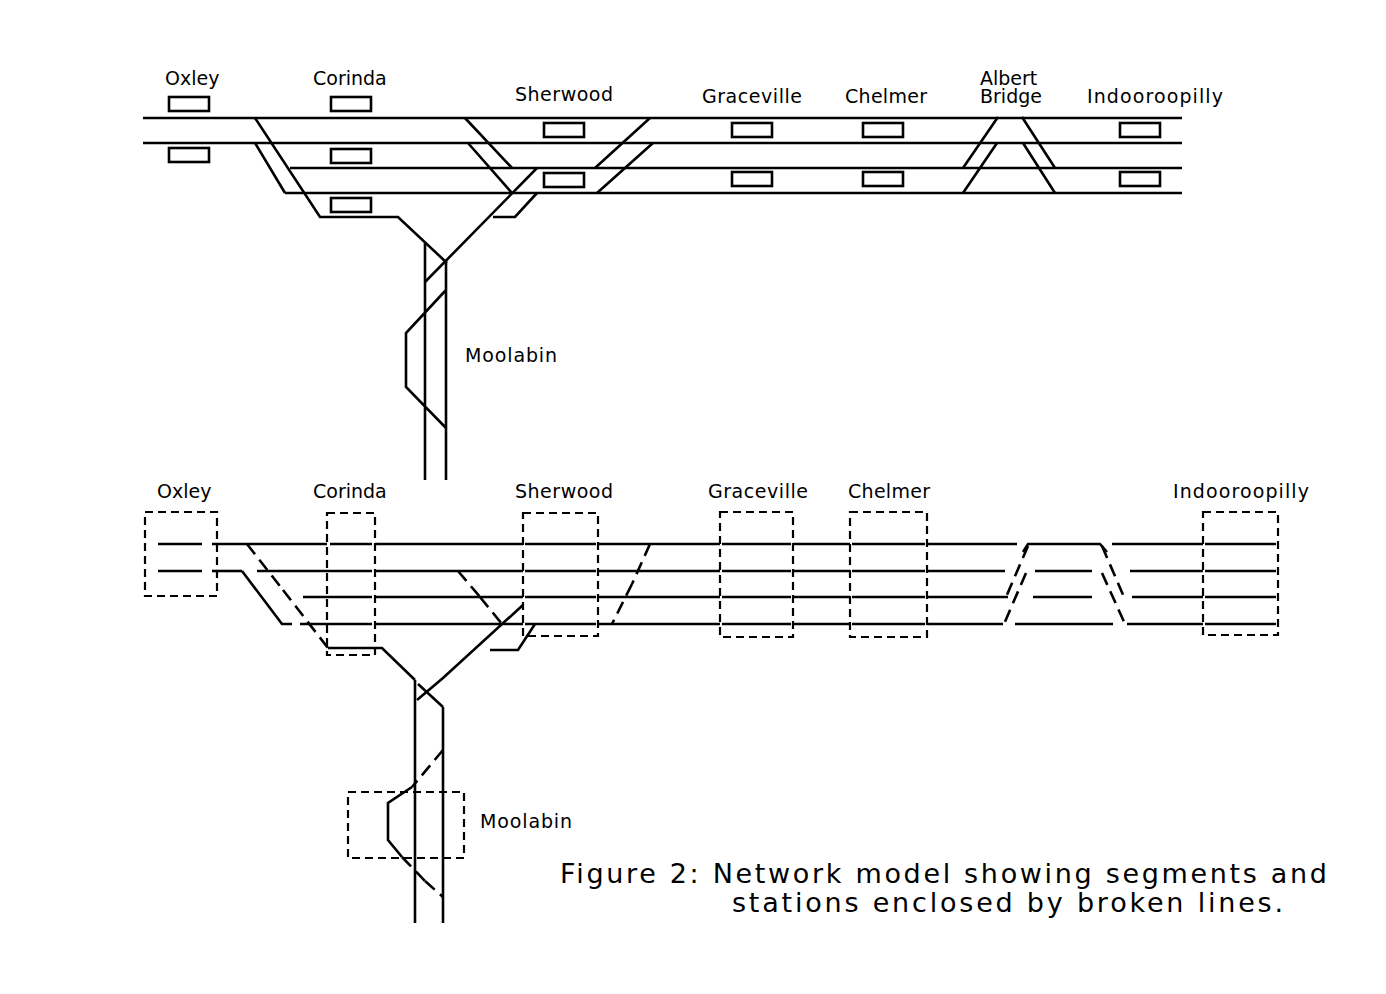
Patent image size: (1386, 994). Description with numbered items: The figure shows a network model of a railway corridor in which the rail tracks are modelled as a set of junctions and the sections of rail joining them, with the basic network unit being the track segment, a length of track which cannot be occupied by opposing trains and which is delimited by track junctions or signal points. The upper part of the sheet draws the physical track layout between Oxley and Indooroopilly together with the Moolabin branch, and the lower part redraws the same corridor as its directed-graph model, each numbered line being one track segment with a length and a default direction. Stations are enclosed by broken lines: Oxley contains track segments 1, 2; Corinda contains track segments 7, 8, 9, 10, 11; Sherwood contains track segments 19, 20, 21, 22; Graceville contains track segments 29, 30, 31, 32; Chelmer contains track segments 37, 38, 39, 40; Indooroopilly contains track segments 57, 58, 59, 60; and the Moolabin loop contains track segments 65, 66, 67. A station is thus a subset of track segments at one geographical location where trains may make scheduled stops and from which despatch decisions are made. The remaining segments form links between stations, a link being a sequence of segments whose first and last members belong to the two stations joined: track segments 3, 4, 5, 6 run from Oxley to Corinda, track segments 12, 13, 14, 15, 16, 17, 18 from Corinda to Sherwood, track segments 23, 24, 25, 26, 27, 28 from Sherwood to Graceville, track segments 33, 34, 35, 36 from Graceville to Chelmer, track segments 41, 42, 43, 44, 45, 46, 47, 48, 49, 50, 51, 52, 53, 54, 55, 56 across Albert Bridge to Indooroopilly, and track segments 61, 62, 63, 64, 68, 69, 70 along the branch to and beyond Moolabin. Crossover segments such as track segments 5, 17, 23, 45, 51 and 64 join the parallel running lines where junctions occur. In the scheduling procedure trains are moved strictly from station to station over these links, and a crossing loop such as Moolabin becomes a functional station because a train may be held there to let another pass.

The track segment 1 is at (180, 558).
The track segment 2 is at (180, 531).
The track segment 3 is at (227, 556).
The track segment 4 is at (269, 554).
The track segment 5 is at (305, 619).
The track segment 6 is at (267, 597).
The track segment 7 is at (371, 653).
The track segment 8 is at (351, 611).
The track segment 9 is at (351, 584).
The track segment 10 is at (351, 558).
The track segment 11 is at (351, 531).
The track segment 12 is at (449, 611).
The track segment 13 is at (449, 584).
The track segment 14 is at (449, 558).
The track segment 15 is at (449, 531).
The track segment 16 is at (512, 637).
The track segment 17 is at (477, 609).
The track segment 18 is at (480, 571).
The track segment 19 is at (560, 611).
The track segment 20 is at (560, 584).
The track segment 21 is at (560, 558).
The track segment 22 is at (560, 531).
The track segment 23 is at (629, 605).
The track segment 24 is at (626, 564).
The track segment 25 is at (659, 611).
The track segment 26 is at (659, 584).
The track segment 27 is at (659, 558).
The track segment 28 is at (659, 531).
The track segment 29 is at (756, 611).
The track segment 30 is at (756, 585).
The track segment 31 is at (756, 558).
The track segment 32 is at (756, 531).
The track segment 33 is at (821, 611).
The track segment 34 is at (821, 585).
The track segment 35 is at (821, 558).
The track segment 36 is at (821, 531).
The track segment 37 is at (888, 611).
The track segment 38 is at (888, 585).
The track segment 39 is at (888, 558).
The track segment 40 is at (888, 531).
The track segment 41 is at (965, 611).
The track segment 42 is at (967, 585).
The track segment 43 is at (966, 558).
The track segment 44 is at (972, 531).
The track segment 45 is at (1020, 598).
The track segment 46 is at (1009, 571).
The track segment 47 is at (1064, 611).
The track segment 48 is at (1062, 584).
The track segment 49 is at (1063, 558).
The track segment 50 is at (1065, 535).
The track segment 51 is at (1127, 598).
The track segment 52 is at (1123, 571).
The track segment 53 is at (1165, 611).
The track segment 54 is at (1167, 584).
The track segment 55 is at (1166, 558).
The track segment 56 is at (1157, 531).
The track segment 57 is at (1240, 611).
The track segment 58 is at (1240, 584).
The track segment 59 is at (1240, 558).
The track segment 60 is at (1240, 531).
The track segment 61 is at (470, 656).
The track segment 62 is at (397, 736).
The track segment 63 is at (460, 749).
The track segment 64 is at (411, 768).
The track segment 65 is at (429, 825).
The track segment 66 is at (402, 825).
The track segment 67 is at (384, 822).
The track segment 68 is at (402, 871).
The track segment 69 is at (451, 890).
The track segment 70 is at (397, 891).